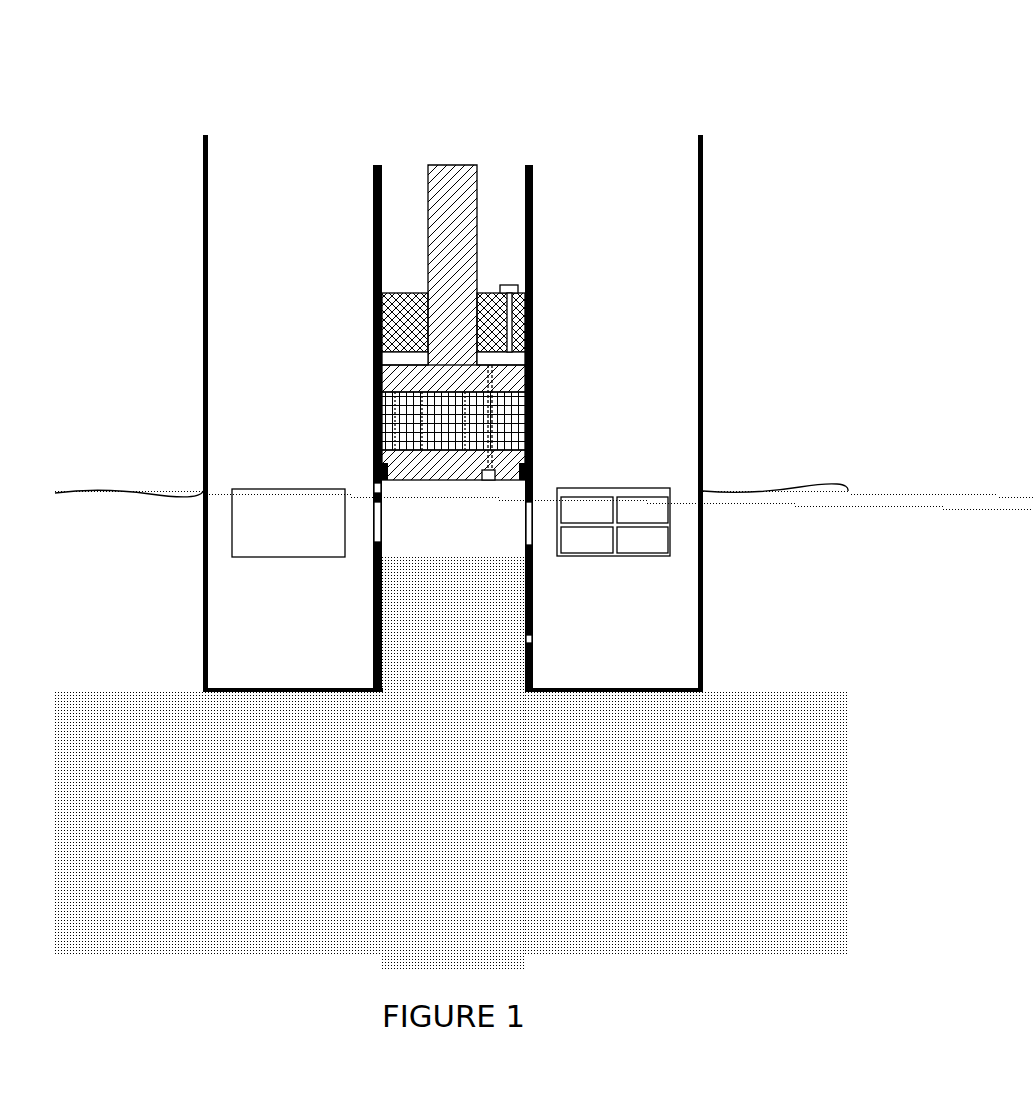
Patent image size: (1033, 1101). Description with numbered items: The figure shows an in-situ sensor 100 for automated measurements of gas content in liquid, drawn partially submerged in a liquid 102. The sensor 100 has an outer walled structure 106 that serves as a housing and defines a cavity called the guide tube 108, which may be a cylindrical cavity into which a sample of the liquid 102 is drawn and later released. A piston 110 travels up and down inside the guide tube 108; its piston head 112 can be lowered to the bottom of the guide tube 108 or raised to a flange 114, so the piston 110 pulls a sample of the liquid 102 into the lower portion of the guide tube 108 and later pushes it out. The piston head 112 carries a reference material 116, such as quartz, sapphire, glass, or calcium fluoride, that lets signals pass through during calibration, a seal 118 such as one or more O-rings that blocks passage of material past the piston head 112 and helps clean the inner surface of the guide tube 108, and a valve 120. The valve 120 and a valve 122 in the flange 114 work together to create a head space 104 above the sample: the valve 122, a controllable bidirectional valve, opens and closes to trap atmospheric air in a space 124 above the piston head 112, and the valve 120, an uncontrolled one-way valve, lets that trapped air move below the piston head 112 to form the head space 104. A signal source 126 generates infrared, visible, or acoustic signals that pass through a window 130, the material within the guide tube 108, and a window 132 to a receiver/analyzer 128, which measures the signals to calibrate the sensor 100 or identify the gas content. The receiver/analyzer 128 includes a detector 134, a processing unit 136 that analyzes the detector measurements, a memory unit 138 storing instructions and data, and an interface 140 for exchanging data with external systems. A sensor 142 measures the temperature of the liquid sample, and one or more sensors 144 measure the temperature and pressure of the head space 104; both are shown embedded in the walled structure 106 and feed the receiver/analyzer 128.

The in-situ sensor 100 is at (243, 52).
The liquid 102 is at (116, 681).
The head space 104 is at (425, 551).
The outer walled structure 106 is at (260, 695).
The guide tube 108 is at (428, 697).
The piston 110 is at (446, 163).
The piston head 112 is at (400, 379).
The flange 114 is at (396, 316).
The reference material 116 is at (514, 428).
The seal 118 is at (385, 486).
The valve 120 is at (487, 484).
The valve 122 is at (498, 282).
The space 124 is at (511, 358).
The signal source 126 is at (259, 561).
The receiver/analyzer 128 is at (620, 515).
The window 130 is at (370, 522).
The window 132 is at (536, 524).
The detector 134 is at (575, 519).
The processing unit 136 is at (630, 519).
The memory unit 138 is at (575, 549).
The interface 140 is at (630, 549).
The sensor 142 is at (522, 640).
The sensors 144 is at (370, 488).